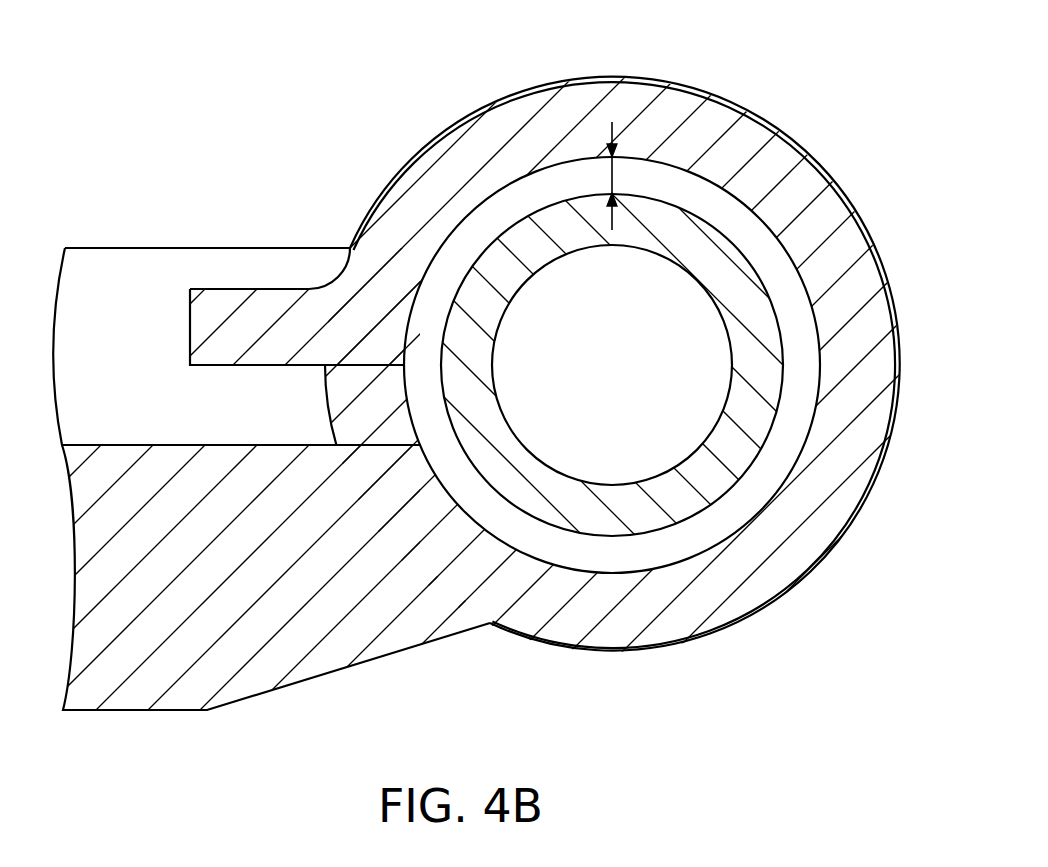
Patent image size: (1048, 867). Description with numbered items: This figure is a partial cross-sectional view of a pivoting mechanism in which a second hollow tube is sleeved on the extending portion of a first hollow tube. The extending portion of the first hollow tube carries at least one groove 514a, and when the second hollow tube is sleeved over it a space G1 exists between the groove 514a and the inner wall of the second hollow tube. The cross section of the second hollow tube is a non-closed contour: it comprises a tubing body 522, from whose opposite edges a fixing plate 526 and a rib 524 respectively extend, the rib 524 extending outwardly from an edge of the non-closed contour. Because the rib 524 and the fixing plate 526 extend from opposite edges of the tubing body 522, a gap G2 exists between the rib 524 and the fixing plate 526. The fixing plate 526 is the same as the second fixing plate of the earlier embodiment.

The tubing body 522 is at (872, 277).
The rib 524 is at (238, 289).
The fixing plate 526 is at (140, 688).
The groove 514a is at (760, 482).
The space G1 is at (613, 172).
The gap G2 is at (277, 400).